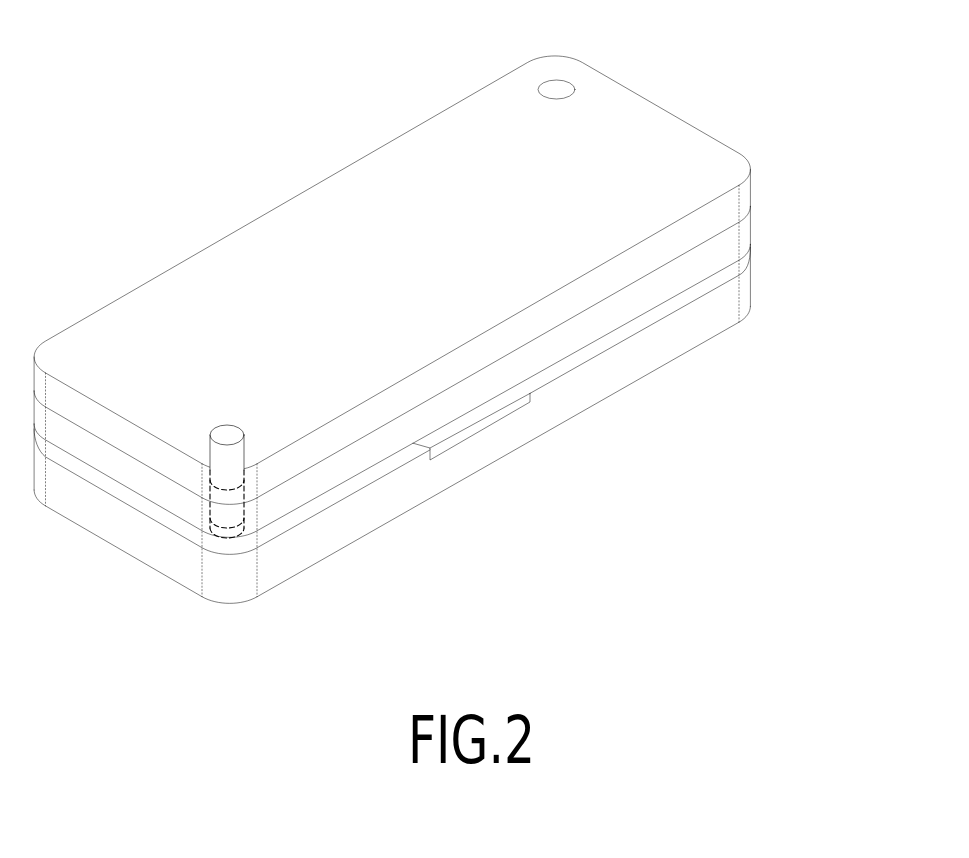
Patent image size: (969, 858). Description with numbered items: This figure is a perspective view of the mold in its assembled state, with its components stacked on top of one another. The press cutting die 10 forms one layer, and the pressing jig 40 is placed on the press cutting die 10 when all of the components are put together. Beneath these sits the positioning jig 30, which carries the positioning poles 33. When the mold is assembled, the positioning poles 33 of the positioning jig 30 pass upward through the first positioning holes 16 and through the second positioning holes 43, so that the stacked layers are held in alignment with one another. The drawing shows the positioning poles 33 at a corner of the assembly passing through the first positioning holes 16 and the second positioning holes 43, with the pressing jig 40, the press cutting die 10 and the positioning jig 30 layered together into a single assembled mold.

The pressing jig 40 is at (753, 180).
The press cutting die 10 is at (752, 225).
The positioning jig 30 is at (752, 281).
The positioning pole 33 is at (223, 437).
The second positioning hole 43 is at (225, 460).
The first positioning hole 16 is at (232, 497).